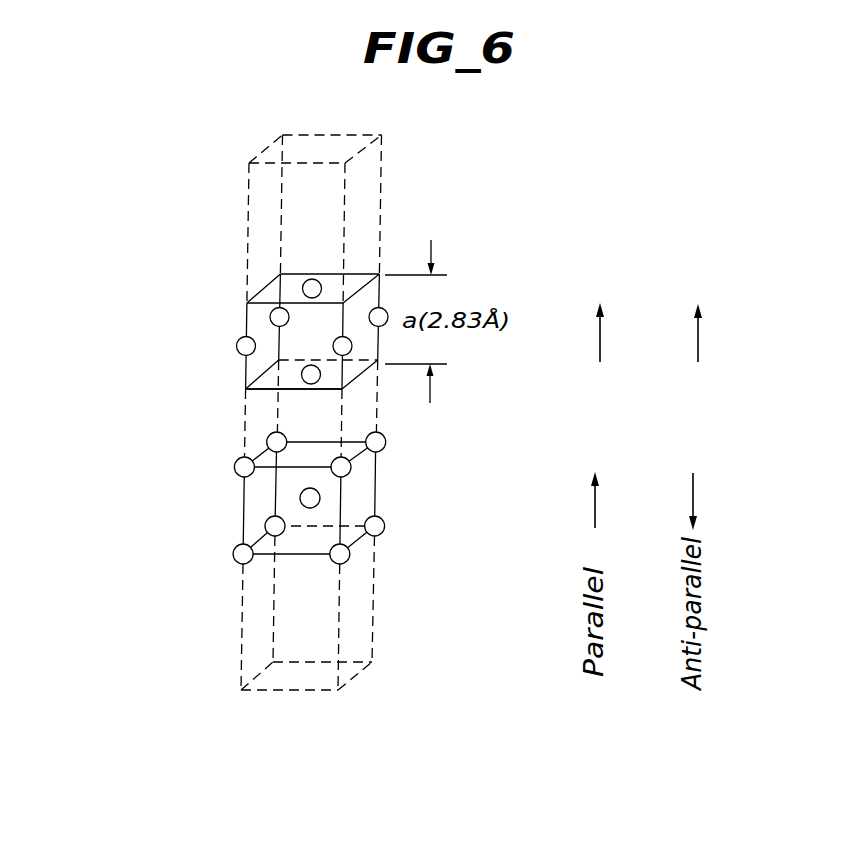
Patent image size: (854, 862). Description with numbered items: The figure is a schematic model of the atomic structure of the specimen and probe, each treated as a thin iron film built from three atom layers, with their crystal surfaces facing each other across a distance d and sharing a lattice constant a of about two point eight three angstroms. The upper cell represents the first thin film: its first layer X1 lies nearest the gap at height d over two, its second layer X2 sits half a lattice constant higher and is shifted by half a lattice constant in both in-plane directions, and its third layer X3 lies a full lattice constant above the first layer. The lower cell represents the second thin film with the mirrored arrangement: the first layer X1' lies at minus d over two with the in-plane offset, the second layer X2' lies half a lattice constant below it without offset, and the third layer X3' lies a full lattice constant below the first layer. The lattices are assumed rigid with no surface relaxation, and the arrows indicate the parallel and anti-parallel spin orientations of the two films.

The first layer of the first thin film X1 is at (209, 392).
The second layer of the first thin film X2 is at (166, 349).
The third layer of the first thin film X3 is at (182, 310).
The first layer of the second thin film X1' is at (165, 468).
The second layer of the second thin film X2' is at (198, 498).
The third layer of the second thin film X3' is at (164, 554).